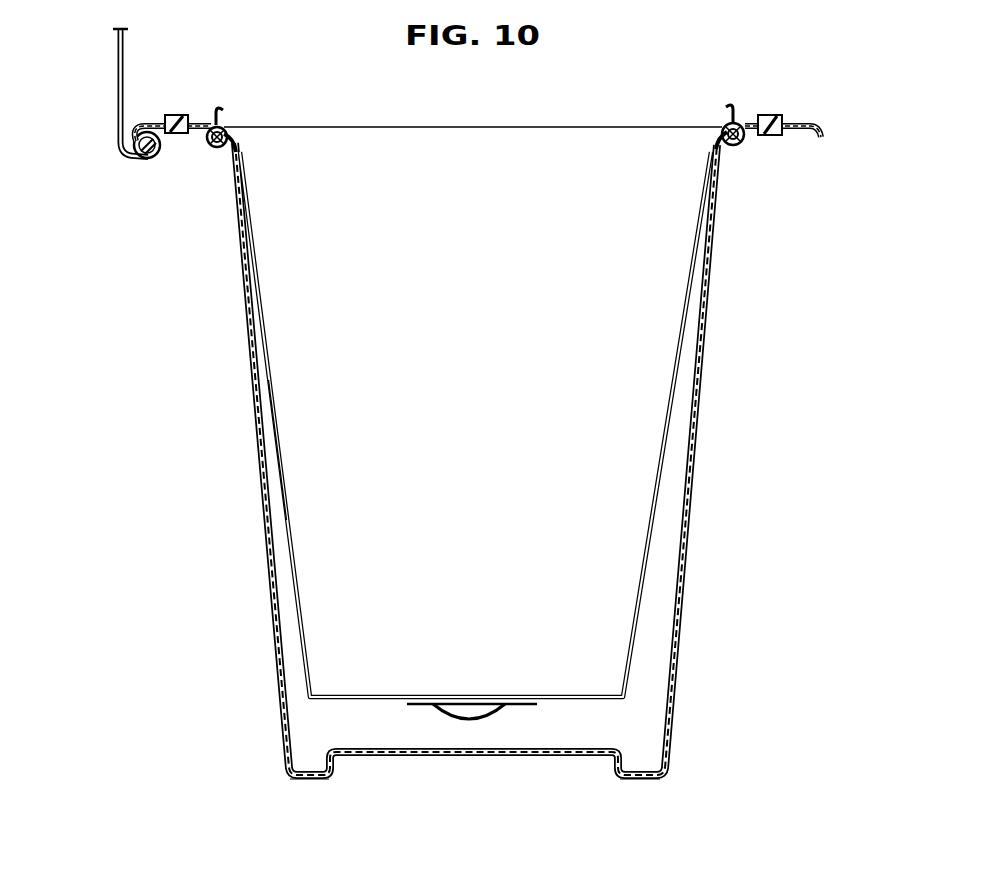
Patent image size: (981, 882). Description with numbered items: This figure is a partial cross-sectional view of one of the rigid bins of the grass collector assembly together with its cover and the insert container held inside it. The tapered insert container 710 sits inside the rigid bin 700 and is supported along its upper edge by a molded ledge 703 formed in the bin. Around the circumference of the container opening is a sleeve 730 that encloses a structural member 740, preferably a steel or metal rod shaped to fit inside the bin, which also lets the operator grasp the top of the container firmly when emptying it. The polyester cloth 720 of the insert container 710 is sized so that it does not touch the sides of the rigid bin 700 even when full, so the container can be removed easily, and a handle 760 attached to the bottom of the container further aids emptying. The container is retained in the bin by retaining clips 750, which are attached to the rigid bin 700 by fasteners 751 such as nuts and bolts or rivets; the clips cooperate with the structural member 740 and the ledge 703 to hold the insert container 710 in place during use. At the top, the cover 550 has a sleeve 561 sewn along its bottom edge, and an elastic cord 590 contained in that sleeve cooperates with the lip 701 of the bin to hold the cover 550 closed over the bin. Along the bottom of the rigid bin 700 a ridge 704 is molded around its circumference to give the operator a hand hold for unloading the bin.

The cover 550 is at (118, 55).
The sleeve 561 is at (130, 150).
The elastic cord 590 is at (147, 159).
The rigid bin 700 is at (265, 539).
The lip 701 is at (137, 127).
The molded ledge 703 is at (209, 147).
The ridge 704 is at (313, 780).
The insert container 710 is at (276, 354).
The polyester cloth 720 is at (283, 447).
The sleeve 730 is at (232, 133).
The structural member 740 is at (226, 127).
The retaining clip 750 is at (220, 108).
The fastener 751 is at (172, 115).
The handle 760 is at (440, 710).